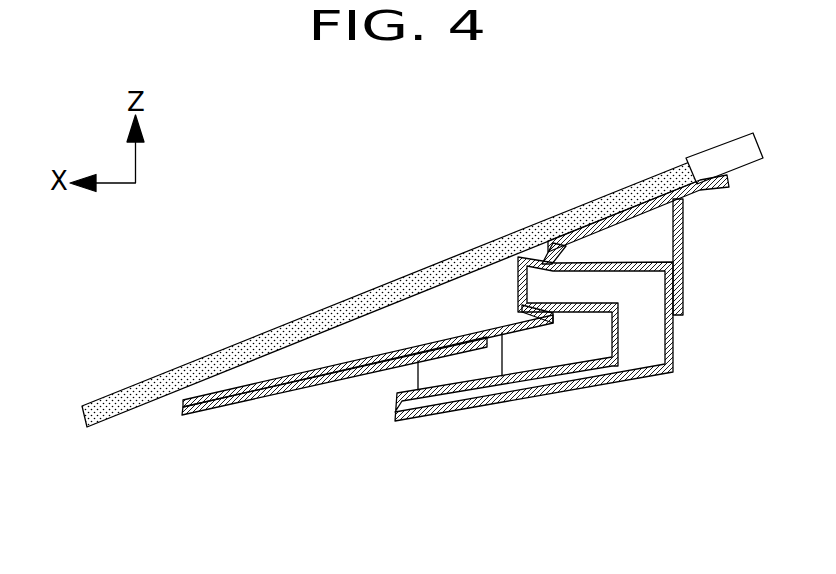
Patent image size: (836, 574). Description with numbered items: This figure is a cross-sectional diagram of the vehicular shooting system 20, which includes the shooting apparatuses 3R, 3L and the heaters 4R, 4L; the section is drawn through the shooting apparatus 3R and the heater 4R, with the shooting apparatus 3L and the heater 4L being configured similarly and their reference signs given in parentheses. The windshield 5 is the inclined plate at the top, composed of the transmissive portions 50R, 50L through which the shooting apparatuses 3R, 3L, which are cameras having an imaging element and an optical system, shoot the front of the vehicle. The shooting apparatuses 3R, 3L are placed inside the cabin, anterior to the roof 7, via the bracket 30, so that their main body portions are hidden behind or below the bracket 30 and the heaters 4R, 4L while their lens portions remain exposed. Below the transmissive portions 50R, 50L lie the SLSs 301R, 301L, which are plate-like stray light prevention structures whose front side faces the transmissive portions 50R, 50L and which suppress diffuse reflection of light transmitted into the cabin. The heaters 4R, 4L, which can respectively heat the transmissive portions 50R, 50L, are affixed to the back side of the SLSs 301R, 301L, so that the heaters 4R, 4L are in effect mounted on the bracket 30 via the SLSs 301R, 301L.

The windshield 5 is at (247, 326).
The transmissive portion 50R is at (392, 293).
The transmissive portion 50L is at (417, 269).
The roof 7 is at (706, 152).
The bracket 30 is at (693, 197).
The heater 4R is at (367, 398).
The heater 4L is at (282, 390).
The SLS (stray light prevention structure) 301R is at (111, 442).
The SLS (stray light prevention structure) 301L is at (175, 396).
The shooting apparatus 3R is at (534, 379).
The shooting apparatus 3L is at (485, 404).
The vehicular shooting system 20 is at (347, 399).